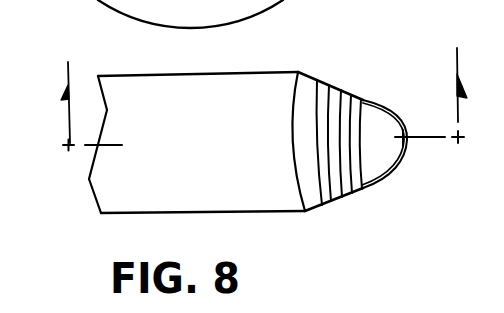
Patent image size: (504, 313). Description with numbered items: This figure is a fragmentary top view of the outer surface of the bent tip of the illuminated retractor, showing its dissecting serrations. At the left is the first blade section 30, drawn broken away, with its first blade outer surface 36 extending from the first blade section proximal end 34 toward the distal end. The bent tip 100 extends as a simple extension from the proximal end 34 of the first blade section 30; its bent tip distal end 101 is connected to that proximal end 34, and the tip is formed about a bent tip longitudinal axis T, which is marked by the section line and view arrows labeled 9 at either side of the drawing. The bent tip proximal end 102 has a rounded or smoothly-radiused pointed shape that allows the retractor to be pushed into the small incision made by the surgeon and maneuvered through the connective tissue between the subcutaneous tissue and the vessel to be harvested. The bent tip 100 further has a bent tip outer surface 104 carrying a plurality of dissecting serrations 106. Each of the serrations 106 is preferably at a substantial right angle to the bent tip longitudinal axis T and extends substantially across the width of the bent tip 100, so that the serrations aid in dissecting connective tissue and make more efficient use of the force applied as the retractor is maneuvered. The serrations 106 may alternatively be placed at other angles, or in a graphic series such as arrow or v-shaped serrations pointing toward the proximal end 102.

The section line for FIG. 9 is at (266, 88).
The first blade section 30 is at (261, 97).
The first blade section proximal end 34 is at (288, 213).
The first blade outer surface 36 is at (187, 97).
The bent tip 100 is at (320, 212).
The bent tip distal end 101 is at (298, 72).
The bent tip proximal end 102 is at (397, 115).
The bent tip outer surface 104 is at (340, 88).
The dissecting serrations 106 is at (363, 188).